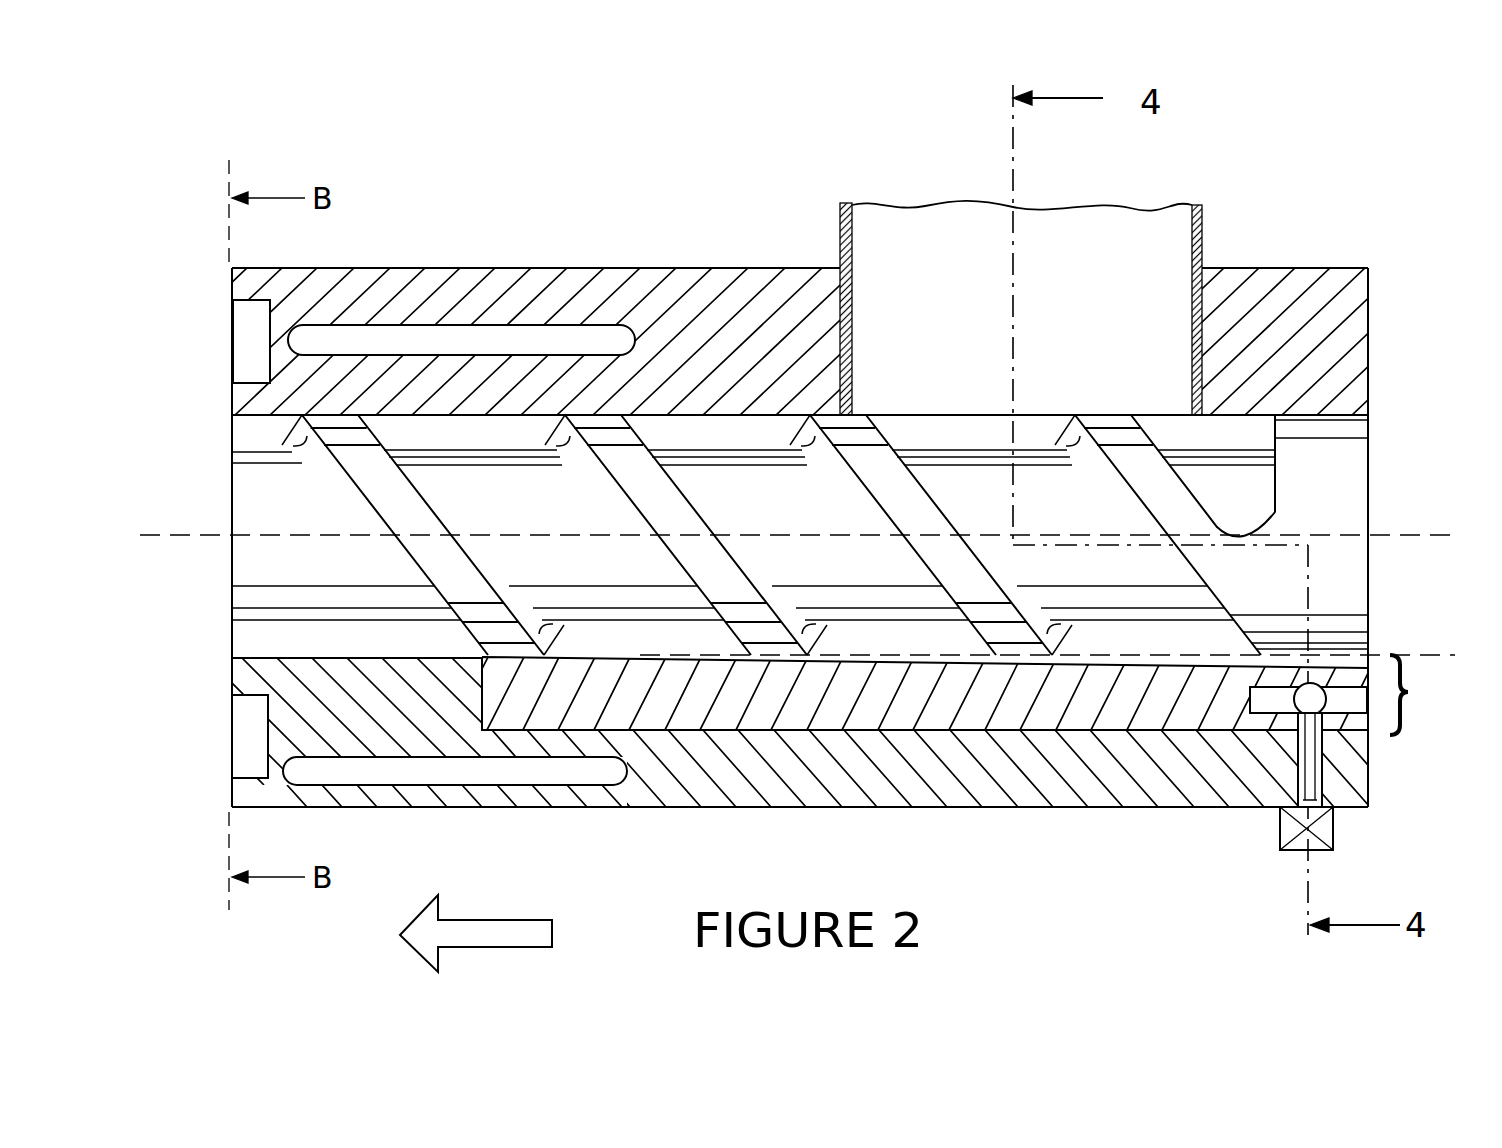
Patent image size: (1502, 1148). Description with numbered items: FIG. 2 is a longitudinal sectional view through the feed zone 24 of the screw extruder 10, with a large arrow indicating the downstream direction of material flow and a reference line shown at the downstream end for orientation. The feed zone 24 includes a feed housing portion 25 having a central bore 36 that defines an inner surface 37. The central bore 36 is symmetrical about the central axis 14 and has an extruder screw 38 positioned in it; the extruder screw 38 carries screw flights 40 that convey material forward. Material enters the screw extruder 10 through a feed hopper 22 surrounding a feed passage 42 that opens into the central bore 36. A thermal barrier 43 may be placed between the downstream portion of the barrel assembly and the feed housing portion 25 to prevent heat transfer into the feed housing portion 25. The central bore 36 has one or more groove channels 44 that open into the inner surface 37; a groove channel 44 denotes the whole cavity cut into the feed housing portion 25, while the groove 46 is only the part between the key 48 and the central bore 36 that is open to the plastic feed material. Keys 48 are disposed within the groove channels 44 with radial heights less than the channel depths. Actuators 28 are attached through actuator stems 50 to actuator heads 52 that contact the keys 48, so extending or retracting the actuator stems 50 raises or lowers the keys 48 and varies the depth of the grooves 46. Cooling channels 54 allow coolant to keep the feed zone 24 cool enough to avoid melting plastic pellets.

The screw extruder 10 is at (1390, 208).
The central axis 14 is at (207, 532).
The feed hopper 22 is at (1205, 215).
The feed zone 24 is at (772, 217).
The feed housing portion 25 is at (470, 268).
The actuator 28 is at (1290, 823).
The central bore 36 is at (245, 432).
The inner surface 37 is at (255, 657).
The extruder screw 38 is at (1340, 465).
The screw flights 40 is at (815, 443).
The feed passage 42 is at (1040, 410).
The thermal barrier 43 is at (258, 335).
The groove channel 44 is at (1412, 692).
The groove 46 is at (1372, 657).
The key 48 is at (1085, 705).
The actuator stem 50 is at (1325, 813).
The actuator head 52 is at (1345, 723).
The cooling channel 54 is at (520, 775).